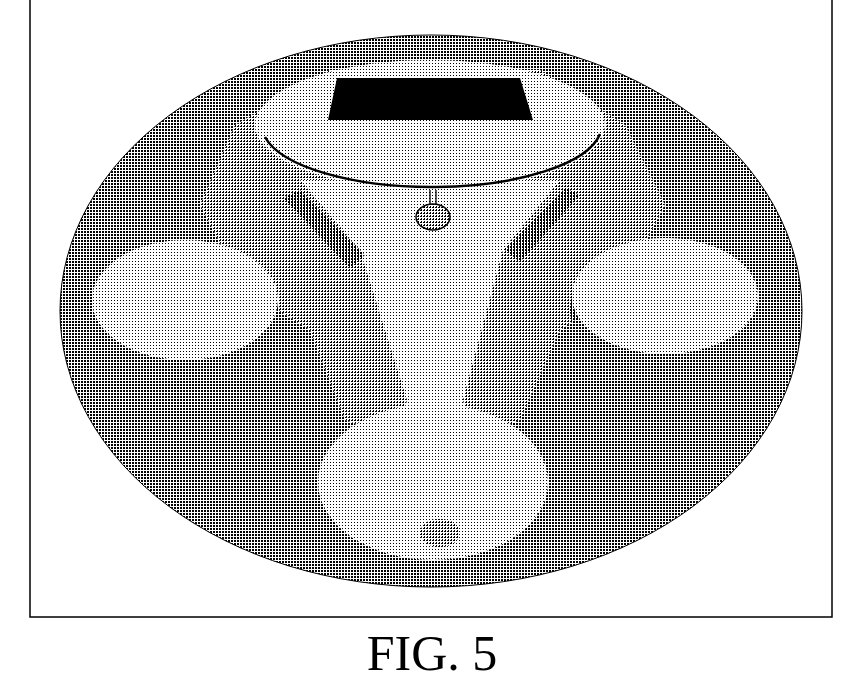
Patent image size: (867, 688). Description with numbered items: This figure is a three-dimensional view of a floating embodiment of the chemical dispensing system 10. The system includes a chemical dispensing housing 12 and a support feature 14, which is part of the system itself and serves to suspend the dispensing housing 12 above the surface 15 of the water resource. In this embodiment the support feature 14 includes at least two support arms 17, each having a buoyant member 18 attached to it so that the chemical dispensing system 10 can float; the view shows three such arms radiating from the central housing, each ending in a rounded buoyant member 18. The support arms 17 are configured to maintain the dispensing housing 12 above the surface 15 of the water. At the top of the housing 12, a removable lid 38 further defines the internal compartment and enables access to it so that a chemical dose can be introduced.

The chemical dispensing system 10 is at (219, 66).
The removable lid 38 is at (563, 102).
The support feature 14 is at (645, 182).
The chemical dispensing housing 12 is at (555, 222).
The support arm 17 is at (420, 317).
The surface of the water resource 15 is at (205, 465).
The buoyant member 18 is at (505, 505).